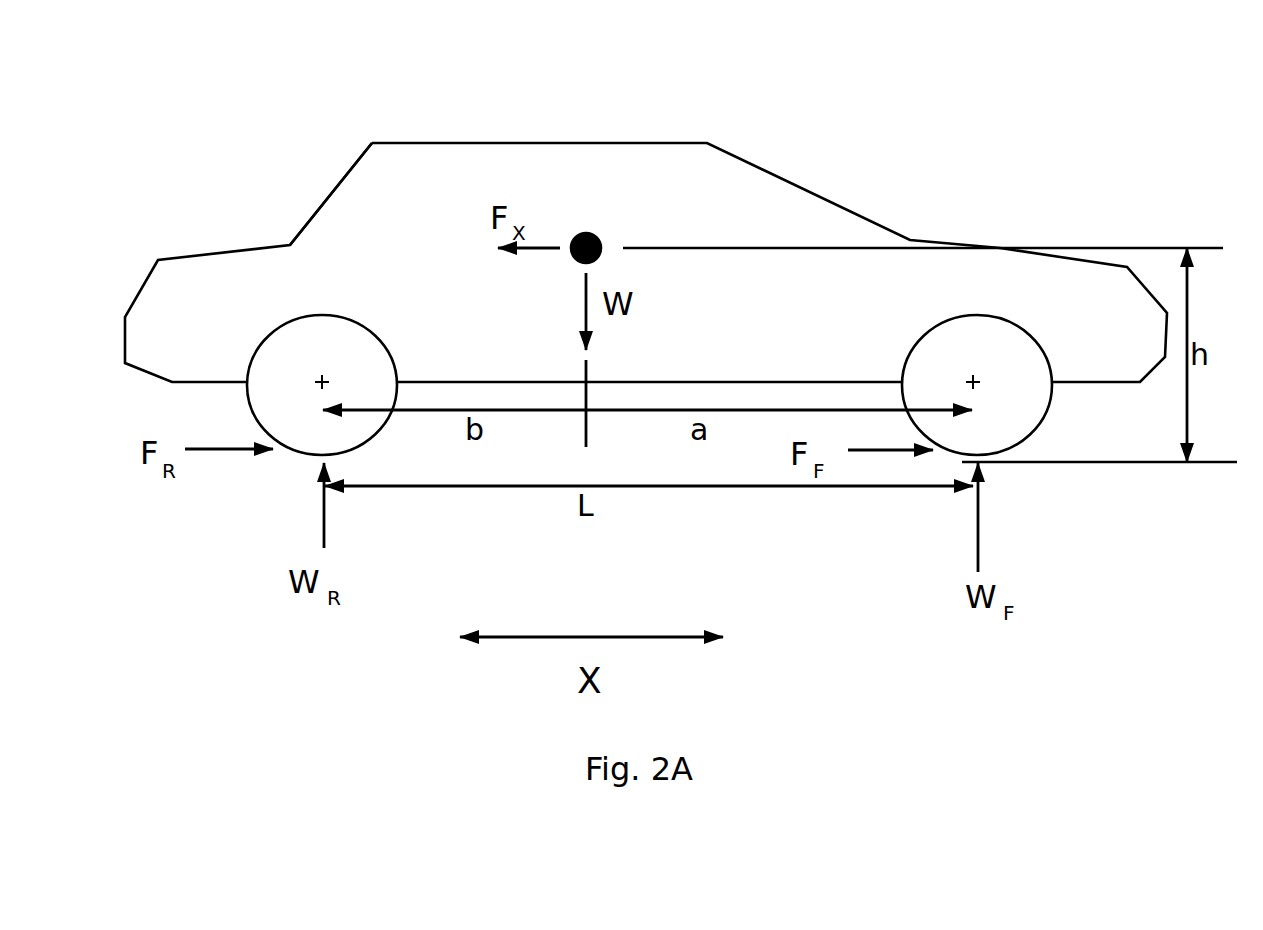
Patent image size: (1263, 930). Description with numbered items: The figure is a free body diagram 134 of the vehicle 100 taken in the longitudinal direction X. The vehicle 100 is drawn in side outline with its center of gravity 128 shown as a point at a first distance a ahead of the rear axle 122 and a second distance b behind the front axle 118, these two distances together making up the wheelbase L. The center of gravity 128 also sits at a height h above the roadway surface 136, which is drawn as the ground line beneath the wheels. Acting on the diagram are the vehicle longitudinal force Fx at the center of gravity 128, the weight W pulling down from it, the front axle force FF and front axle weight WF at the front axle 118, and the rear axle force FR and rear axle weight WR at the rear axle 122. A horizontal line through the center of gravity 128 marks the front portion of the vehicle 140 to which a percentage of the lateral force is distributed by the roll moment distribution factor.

The vehicle 100 is at (925, 148).
The longitudinal free body diagram 134 is at (288, 170).
The rear axle 122 is at (322, 377).
The front axle 118 is at (972, 377).
The center of gravity 128 is at (600, 237).
The front portion of the vehicle 140 is at (1137, 233).
The roadway surface 136 is at (1102, 462).